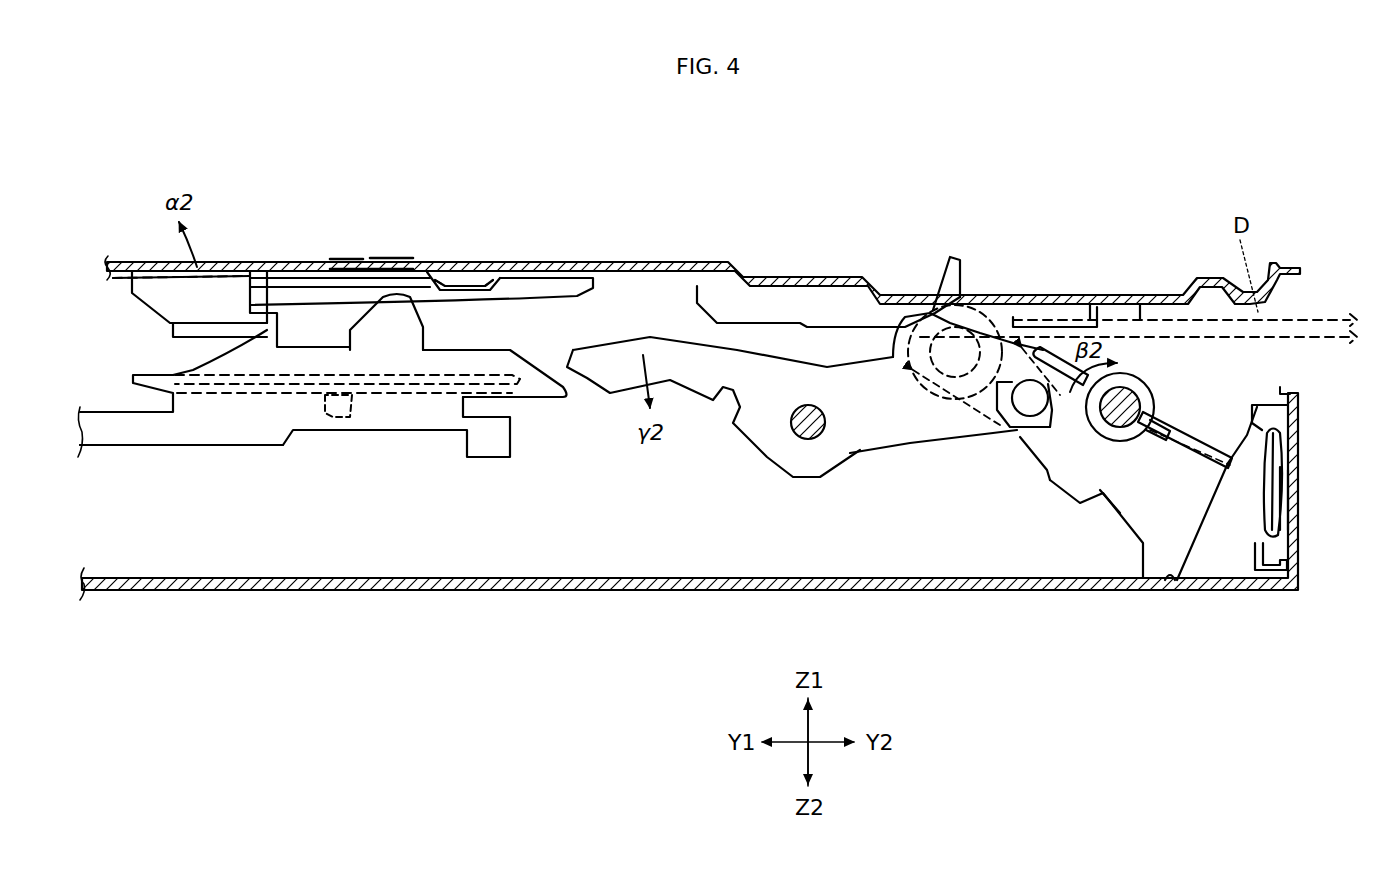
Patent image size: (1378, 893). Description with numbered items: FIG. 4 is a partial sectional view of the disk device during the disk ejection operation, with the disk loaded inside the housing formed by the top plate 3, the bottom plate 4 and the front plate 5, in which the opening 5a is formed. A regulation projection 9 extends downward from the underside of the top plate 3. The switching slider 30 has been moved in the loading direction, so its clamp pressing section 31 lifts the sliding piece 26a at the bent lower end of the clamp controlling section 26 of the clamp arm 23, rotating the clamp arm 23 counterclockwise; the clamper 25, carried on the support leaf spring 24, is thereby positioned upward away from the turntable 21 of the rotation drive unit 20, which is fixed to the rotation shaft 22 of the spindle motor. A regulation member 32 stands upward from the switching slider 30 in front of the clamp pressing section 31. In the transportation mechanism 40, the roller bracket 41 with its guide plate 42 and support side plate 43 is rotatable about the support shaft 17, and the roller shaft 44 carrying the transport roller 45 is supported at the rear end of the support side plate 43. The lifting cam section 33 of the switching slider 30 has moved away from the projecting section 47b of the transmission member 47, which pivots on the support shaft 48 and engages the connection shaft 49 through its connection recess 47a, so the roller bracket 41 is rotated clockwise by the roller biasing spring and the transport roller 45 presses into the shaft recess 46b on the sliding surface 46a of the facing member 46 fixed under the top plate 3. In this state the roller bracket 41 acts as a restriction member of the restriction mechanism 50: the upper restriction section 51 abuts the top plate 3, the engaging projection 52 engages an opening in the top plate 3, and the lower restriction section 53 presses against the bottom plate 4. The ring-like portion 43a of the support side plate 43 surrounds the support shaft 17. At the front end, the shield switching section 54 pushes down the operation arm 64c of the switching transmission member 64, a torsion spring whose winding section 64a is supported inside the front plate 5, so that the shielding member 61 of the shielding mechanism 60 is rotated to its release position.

The top plate 3 is at (770, 264).
The bottom plate 4 is at (900, 592).
The front plate 5 is at (1293, 518).
The opening 5a is at (1300, 276).
The regulation projection 9 is at (475, 290).
The support shaft 17 is at (1133, 393).
The rotation drive unit 20 is at (400, 410).
The turntable 21 is at (208, 392).
The rotation shaft 22 is at (333, 418).
The clamp arm 23 is at (125, 265).
The support leaf spring 24 is at (350, 257).
The clamper 25 is at (297, 290).
The clamp controlling section 26 is at (220, 290).
The sliding piece 26a is at (190, 340).
The switching slider 30 is at (255, 443).
The clamp pressing section 31 is at (272, 330).
The regulation member 32 is at (395, 320).
The lifting cam section 33 is at (543, 388).
The transportation mechanism 40 is at (1097, 335).
The roller bracket 41 is at (1075, 505).
The guide plate 42 is at (1185, 428).
The support side plate 43 is at (1047, 470).
The ring portion 43a is at (1133, 380).
The roller shaft 44 is at (950, 352).
The transport roller 45 is at (888, 355).
The facing member 46 is at (1080, 307).
The sliding surface 46a is at (855, 335).
The shaft recess 46b is at (925, 313).
The transmission member 47 is at (765, 428).
The connection recess 47a is at (1027, 380).
The projecting section 47b is at (621, 362).
The support shaft 48 is at (808, 440).
The connection shaft 49 is at (1027, 405).
The restriction mechanism 50 is at (1128, 553).
The upper restriction section 51 is at (1030, 315).
The engaging projection 52 is at (955, 258).
The lower restriction section 53 is at (1175, 582).
The shield switching section 54 is at (1240, 470).
The shielding mechanism 60 is at (1271, 582).
The shielding member 61 is at (1291, 395).
The switching transmission member 64 is at (1275, 545).
The winding section 64a is at (1284, 490).
The operation arm 64c is at (1288, 443).